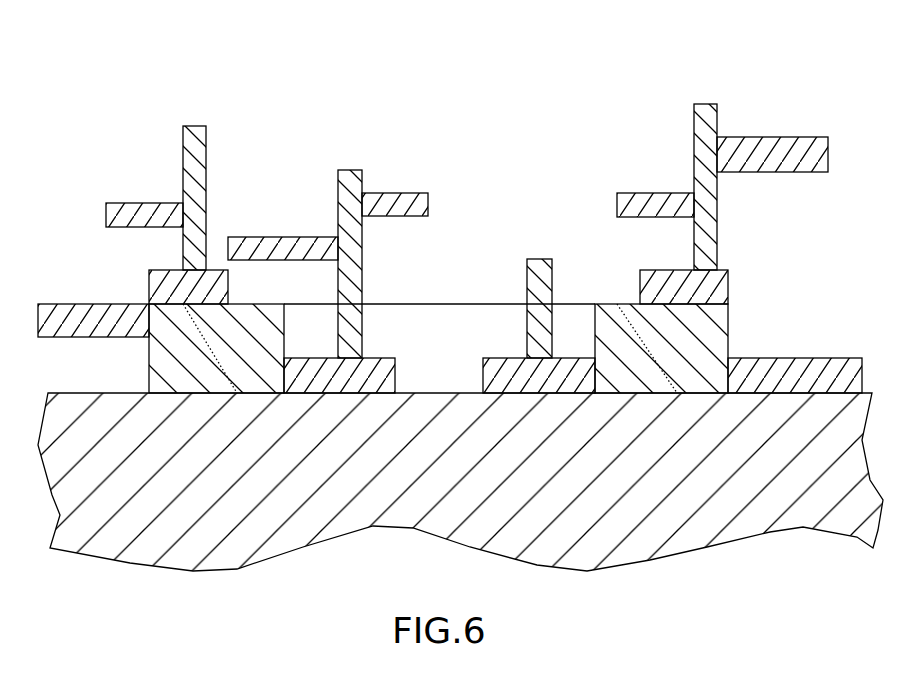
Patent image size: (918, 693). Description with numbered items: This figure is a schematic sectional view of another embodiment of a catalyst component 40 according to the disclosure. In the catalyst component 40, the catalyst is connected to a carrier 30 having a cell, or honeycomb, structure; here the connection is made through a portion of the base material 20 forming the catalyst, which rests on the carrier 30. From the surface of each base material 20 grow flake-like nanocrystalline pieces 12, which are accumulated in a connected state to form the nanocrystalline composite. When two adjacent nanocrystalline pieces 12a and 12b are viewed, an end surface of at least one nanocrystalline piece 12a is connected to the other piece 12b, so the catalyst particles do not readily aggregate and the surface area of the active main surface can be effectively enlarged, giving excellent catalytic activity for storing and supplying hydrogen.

The nanocrystalline piece 12 is at (190, 140).
The nanocrystalline piece 12a is at (750, 148).
The nanocrystalline piece 12b is at (712, 105).
The base material 20 is at (183, 356).
The carrier 30 is at (760, 508).
The catalyst component 40 is at (730, 150).